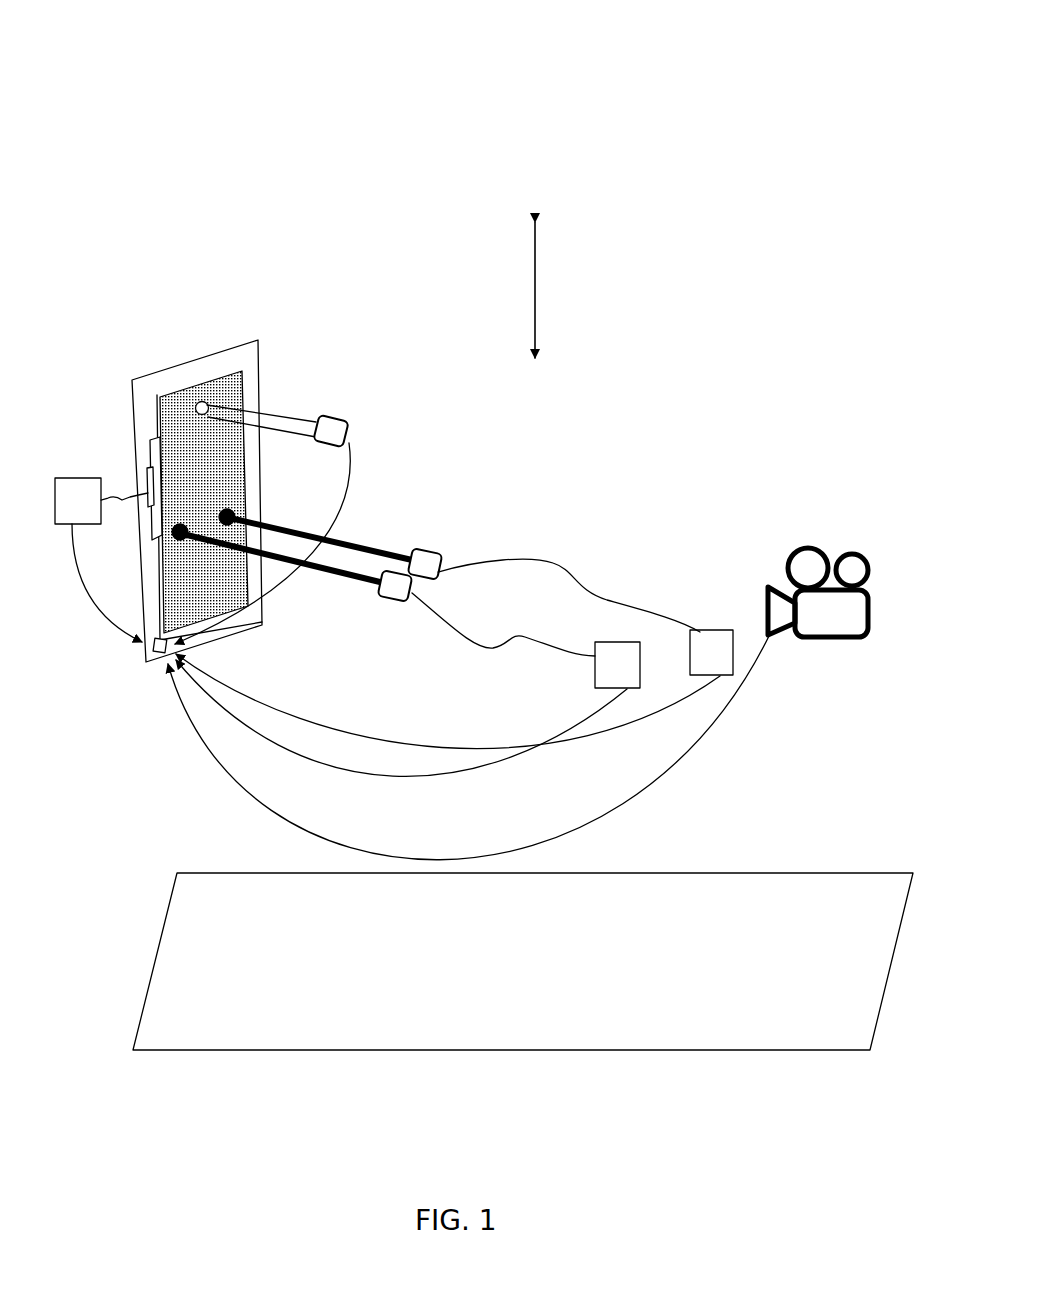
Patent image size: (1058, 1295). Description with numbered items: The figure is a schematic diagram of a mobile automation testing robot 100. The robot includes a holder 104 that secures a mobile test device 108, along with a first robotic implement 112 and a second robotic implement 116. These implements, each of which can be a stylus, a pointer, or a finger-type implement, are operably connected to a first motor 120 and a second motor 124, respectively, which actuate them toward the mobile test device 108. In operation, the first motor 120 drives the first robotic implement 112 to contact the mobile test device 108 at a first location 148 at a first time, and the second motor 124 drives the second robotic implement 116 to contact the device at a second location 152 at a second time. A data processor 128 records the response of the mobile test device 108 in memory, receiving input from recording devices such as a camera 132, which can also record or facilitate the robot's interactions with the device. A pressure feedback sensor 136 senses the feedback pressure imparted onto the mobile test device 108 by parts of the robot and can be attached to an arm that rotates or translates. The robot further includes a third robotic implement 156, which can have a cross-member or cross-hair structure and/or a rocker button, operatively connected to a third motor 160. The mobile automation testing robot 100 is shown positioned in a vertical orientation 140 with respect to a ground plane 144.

The mobile automation testing robot 100 is at (535, 66).
The holder 104 is at (148, 378).
The mobile test device 108 is at (204, 401).
The first robotic implement 112 is at (330, 570).
The second robotic implement 116 is at (352, 542).
The first motor 120 is at (595, 678).
The second motor 124 is at (707, 629).
The data processor 128 is at (152, 650).
The camera 132 is at (813, 545).
The pressure feedback sensor 136 is at (283, 412).
The vertical orientation 140 is at (533, 275).
The ground plane 144 is at (652, 898).
The first location 148 is at (178, 538).
The second location 152 is at (232, 512).
The third robotic implement 156 is at (150, 502).
The third motor 160 is at (82, 478).